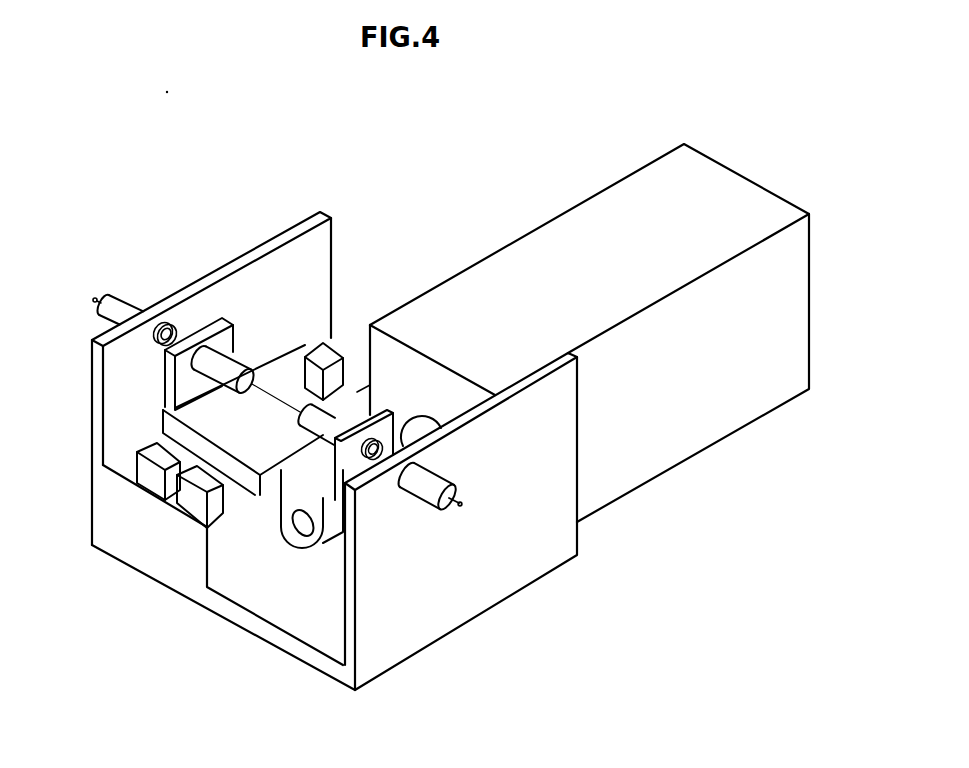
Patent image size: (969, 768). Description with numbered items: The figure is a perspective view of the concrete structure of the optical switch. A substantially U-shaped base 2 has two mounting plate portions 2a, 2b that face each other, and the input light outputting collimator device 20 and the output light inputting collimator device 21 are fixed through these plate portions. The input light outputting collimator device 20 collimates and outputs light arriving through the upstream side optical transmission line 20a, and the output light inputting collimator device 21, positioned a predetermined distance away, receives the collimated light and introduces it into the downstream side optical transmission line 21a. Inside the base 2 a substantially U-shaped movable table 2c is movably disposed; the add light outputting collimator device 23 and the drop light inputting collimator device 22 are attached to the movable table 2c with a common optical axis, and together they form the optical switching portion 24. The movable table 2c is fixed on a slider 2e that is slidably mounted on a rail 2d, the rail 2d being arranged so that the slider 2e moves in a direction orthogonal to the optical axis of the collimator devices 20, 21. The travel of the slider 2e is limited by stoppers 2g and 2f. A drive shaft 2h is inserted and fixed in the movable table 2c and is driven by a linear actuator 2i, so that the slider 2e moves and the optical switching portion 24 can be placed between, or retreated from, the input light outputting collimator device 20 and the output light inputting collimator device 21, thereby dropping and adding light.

The base 2 is at (305, 666).
The mounting plate portion 2a is at (270, 237).
The mounting plate portion 2b is at (598, 503).
The movable table 2c is at (173, 420).
The rail 2d is at (357, 388).
The slider 2e is at (247, 505).
The stopper 2f is at (353, 362).
The stopper 2g is at (152, 480).
The drive shaft 2h is at (298, 537).
The linear actuator 2i is at (558, 240).
The input light outputting collimator device 20 is at (125, 295).
The upstream side optical transmission line 20a is at (96, 298).
The output light inputting collimator device 21 is at (421, 495).
The downstream side optical transmission line 21a is at (461, 504).
The drop light inputting collimator device 22 is at (203, 408).
The add light outputting collimator device 23 is at (300, 445).
The optical switching portion 24 is at (242, 327).